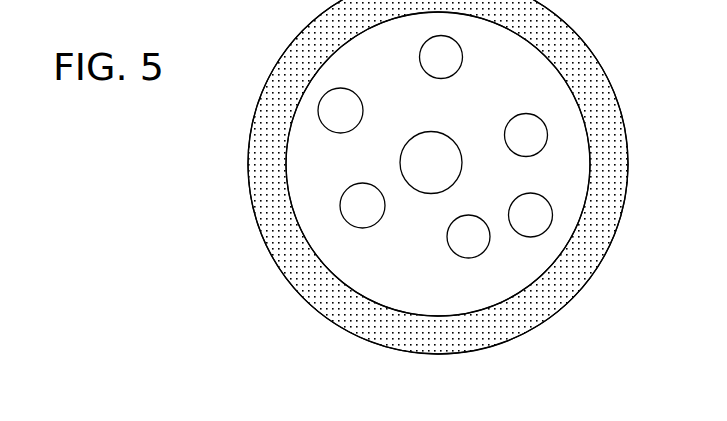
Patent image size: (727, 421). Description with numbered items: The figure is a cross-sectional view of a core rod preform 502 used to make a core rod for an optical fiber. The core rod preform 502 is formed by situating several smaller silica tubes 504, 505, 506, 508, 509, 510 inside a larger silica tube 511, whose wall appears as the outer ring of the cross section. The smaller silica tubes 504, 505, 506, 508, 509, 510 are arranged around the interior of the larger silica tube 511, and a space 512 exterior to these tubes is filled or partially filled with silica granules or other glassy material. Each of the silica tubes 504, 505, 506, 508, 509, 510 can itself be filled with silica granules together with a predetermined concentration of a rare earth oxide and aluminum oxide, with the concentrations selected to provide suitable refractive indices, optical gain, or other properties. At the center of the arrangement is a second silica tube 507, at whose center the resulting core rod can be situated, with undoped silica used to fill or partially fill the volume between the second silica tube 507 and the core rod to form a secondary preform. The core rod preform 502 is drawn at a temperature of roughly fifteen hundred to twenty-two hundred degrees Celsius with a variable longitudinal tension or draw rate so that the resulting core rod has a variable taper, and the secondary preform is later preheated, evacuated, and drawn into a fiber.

The core rod preform 502 is at (607, 52).
The silica tube 504 is at (524, 194).
The silica tube 505 is at (520, 117).
The silica tube 506 is at (461, 48).
The second silica tube 507 is at (453, 178).
The silica tube 508 is at (340, 133).
The silica tube 509 is at (377, 224).
The silica tube 510 is at (466, 259).
The larger silica tube 511 is at (627, 198).
The space 512 is at (414, 91).